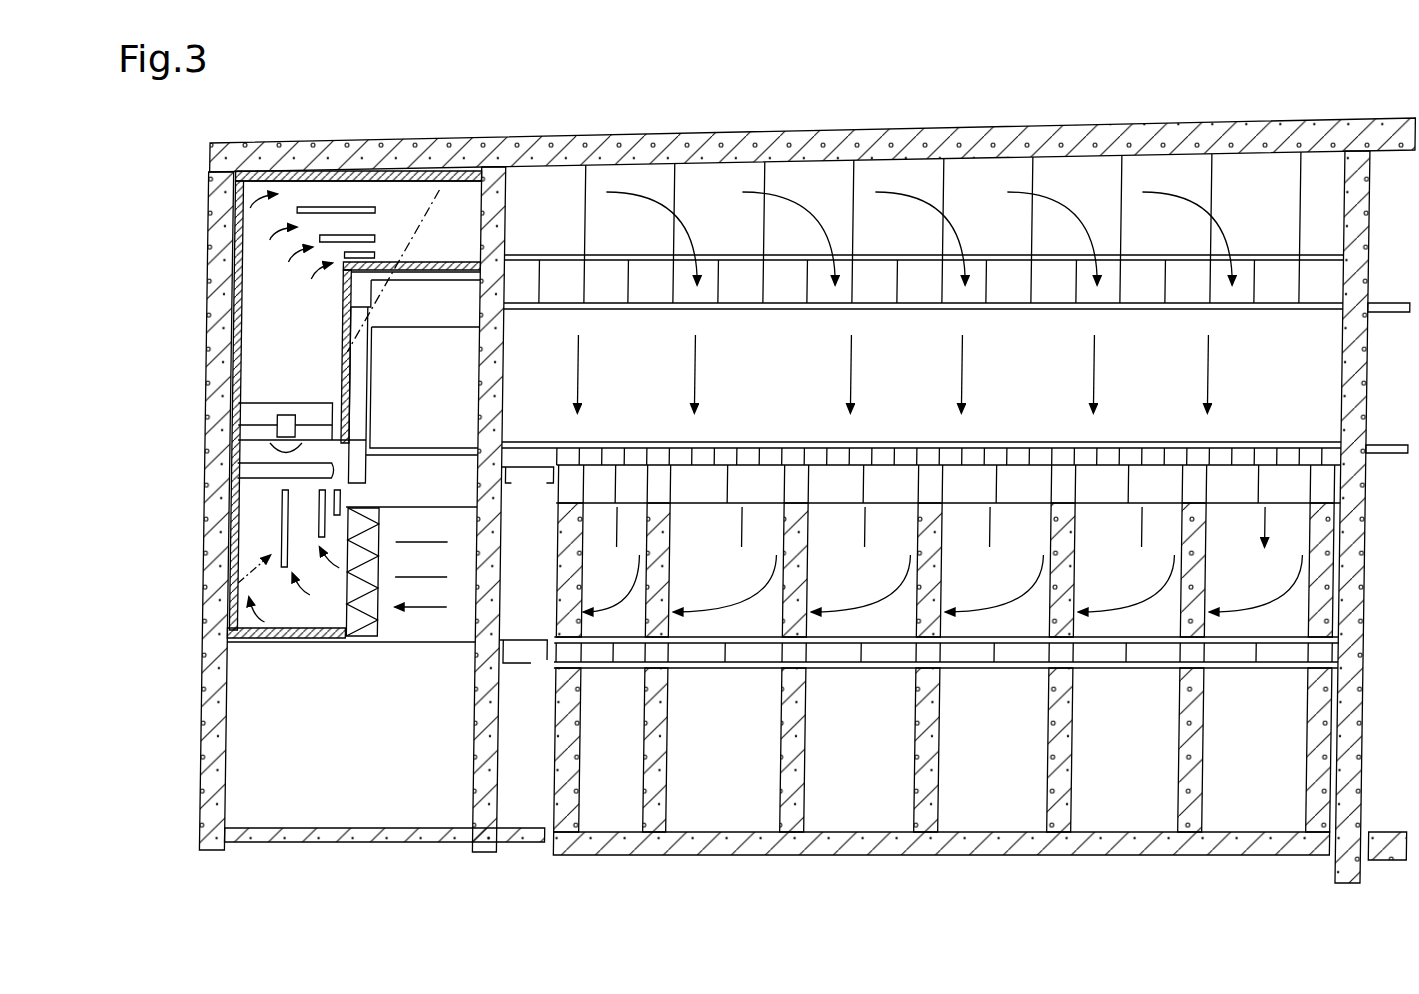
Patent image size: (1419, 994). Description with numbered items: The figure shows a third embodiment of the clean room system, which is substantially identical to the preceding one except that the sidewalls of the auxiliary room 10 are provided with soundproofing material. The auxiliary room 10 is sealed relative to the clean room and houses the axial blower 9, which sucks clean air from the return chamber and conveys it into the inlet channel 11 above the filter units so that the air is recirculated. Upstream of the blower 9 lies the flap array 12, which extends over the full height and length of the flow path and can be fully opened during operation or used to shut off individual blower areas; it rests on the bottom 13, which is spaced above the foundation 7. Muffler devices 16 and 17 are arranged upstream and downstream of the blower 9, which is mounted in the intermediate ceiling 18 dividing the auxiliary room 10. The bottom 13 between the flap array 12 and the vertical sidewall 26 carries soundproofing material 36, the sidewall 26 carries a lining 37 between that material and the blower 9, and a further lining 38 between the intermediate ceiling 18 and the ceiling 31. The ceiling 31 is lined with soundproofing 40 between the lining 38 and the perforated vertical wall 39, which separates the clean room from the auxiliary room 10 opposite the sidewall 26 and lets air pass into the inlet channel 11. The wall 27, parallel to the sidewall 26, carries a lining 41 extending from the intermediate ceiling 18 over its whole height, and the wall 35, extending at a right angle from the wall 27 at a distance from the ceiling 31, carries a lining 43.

The foundation 7 is at (352, 843).
The axial blower 9 is at (268, 433).
The auxiliary room 10 is at (263, 338).
The inlet channel 11 is at (899, 180).
The flap array 12 is at (369, 647).
The bottom 13 is at (302, 648).
The muffler device 16 is at (236, 628).
The muffler device 17 is at (260, 232).
The intermediate ceiling 18 is at (290, 488).
The vertical sidewall 26 is at (250, 570).
The wall 27 is at (457, 168).
The ceiling 31 is at (294, 172).
The wall 35 is at (459, 272).
The soundproofing material 36 is at (224, 700).
The soundproofing lining 37 is at (237, 640).
The soundproofing lining 38 is at (240, 262).
The vertical wall 39 is at (514, 182).
The soundproofing lining 40 is at (347, 172).
The soundproofing lining 41 is at (345, 335).
The soundproofing lining 43 is at (516, 227).